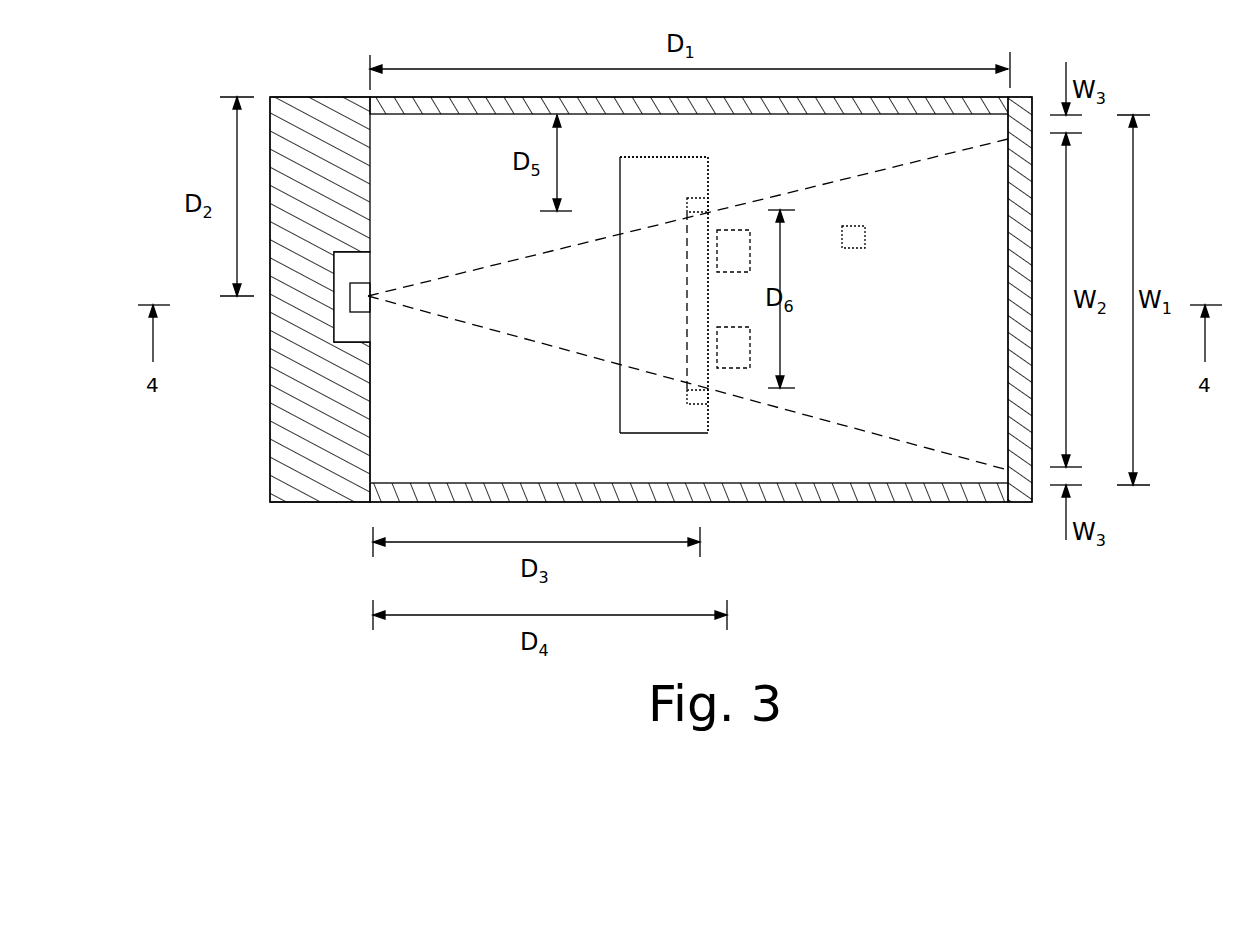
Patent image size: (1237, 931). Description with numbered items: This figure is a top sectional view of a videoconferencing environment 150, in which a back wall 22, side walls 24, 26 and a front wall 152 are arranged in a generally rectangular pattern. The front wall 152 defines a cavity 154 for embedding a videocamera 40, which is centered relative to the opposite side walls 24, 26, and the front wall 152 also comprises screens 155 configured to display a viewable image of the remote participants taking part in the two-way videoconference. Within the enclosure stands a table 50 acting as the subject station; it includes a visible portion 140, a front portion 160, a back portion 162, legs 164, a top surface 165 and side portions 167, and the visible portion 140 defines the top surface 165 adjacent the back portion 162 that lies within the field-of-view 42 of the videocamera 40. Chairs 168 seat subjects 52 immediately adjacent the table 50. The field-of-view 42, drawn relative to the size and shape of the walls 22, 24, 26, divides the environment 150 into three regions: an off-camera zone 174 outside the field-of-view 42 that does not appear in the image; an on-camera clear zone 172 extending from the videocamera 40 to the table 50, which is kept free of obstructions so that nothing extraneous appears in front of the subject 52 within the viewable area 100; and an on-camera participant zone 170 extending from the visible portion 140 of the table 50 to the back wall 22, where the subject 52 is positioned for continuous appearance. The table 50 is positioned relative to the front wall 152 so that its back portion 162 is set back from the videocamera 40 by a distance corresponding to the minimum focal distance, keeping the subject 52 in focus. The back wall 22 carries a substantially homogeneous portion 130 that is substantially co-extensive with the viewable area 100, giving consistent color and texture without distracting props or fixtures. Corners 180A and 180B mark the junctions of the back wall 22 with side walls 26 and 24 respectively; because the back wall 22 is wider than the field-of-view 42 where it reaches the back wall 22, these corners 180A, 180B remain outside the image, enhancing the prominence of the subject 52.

The videoconferencing environment 150 is at (318, 57).
The front wall 152 is at (270, 482).
The cavity 154 is at (335, 282).
The videocamera 40 is at (345, 300).
The screen 155 is at (373, 404).
The side wall 26 is at (420, 115).
The side wall 24 is at (855, 502).
The back wall 22 is at (1008, 400).
The substantially homogeneous portion 130 is at (1008, 292).
The viewable area 100 is at (1003, 247).
The corner 180A is at (1008, 114).
The corner 180B is at (978, 478).
The field-of-view 42 is at (827, 418).
The top surface 165 is at (672, 307).
The side portion 167 is at (662, 157).
The back portion 162 is at (710, 418).
The front portion 160 is at (620, 383).
The table 50 is at (636, 420).
The legs 164 is at (708, 210).
The chairs 168 is at (735, 230).
The visible portion 140 is at (735, 324).
The subject 52 is at (855, 226).
The off-camera zone 174 is at (460, 229).
The on-camera clear zone 172 is at (572, 307).
The on-camera participant zone 170 is at (880, 299).